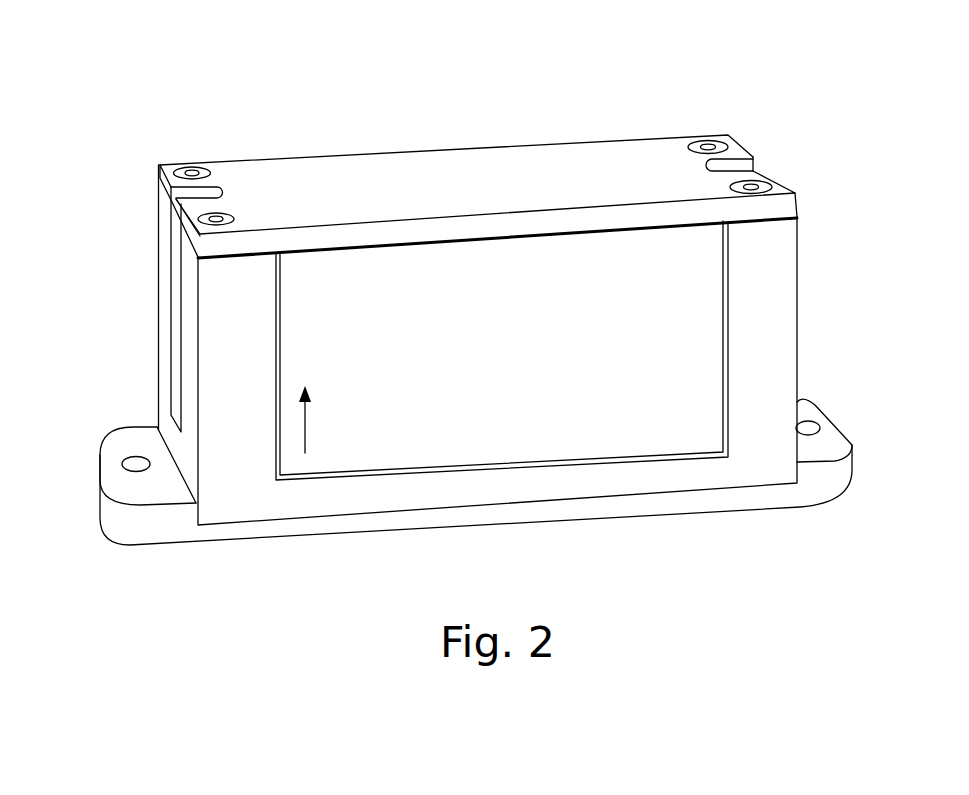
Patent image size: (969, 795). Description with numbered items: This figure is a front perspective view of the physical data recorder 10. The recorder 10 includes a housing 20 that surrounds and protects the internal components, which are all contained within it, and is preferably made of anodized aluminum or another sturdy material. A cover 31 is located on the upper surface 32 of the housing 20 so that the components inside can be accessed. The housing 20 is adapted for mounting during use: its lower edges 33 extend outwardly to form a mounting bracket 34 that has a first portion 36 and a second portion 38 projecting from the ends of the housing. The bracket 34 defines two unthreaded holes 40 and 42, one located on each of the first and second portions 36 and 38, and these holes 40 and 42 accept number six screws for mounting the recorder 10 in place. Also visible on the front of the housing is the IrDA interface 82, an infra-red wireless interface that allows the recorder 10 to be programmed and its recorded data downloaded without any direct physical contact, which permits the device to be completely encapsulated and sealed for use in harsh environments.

The recorder 10 is at (175, 113).
The housing 20 is at (628, 160).
The cover 31 is at (337, 178).
The upper surface 32 is at (262, 175).
The lower edges 33 is at (183, 465).
The mounting bracket 34 is at (163, 493).
The first portion 36 is at (118, 443).
The second portion 38 is at (830, 452).
The unthreaded hole 40 is at (124, 464).
The unthreaded hole 42 is at (808, 430).
The IrDA interface 82 is at (572, 397).